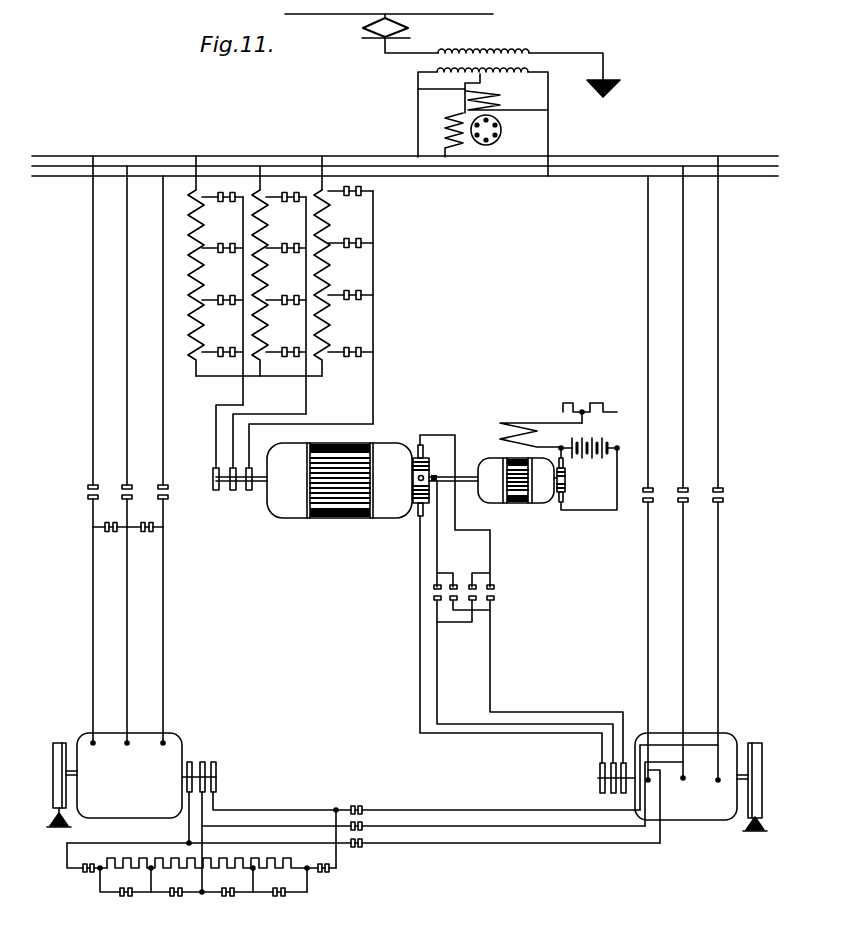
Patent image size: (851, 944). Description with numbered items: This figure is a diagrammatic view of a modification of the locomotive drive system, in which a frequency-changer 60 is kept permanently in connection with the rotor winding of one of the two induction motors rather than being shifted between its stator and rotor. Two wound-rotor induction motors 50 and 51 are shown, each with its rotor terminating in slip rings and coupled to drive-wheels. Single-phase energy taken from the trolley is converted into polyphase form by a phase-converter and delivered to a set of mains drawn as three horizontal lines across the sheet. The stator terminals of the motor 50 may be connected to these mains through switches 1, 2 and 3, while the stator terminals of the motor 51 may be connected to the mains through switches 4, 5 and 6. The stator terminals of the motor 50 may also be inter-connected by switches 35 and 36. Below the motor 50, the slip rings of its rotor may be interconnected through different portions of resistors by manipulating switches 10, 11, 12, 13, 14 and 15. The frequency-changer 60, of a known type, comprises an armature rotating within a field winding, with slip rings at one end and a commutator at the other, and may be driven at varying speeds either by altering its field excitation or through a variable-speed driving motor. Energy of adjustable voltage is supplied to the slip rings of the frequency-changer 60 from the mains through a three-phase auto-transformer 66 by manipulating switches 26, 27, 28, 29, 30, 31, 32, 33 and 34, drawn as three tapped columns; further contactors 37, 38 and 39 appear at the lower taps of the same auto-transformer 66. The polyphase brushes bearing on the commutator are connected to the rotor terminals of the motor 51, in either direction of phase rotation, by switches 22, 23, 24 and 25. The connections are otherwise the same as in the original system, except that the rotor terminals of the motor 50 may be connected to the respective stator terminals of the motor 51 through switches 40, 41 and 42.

The switch 1 is at (87, 492).
The switch 2 is at (121, 492).
The switch 3 is at (157, 492).
The switch 4 is at (642, 495).
The switch 5 is at (677, 495).
The switch 6 is at (712, 495).
The switch 10 is at (86, 873).
The switch 11 is at (324, 873).
The switch 12 is at (133, 901).
The switch 13 is at (280, 901).
The switch 14 is at (186, 901).
The switch 15 is at (235, 901).
The switch 22 is at (445, 602).
The switch 23 is at (433, 590).
The switch 24 is at (493, 589).
The switch 25 is at (478, 602).
The switch 26 is at (222, 189).
The switch 27 is at (222, 240).
The switch 28 is at (222, 293).
The switch 29 is at (286, 189).
The switch 30 is at (286, 240).
The switch 31 is at (286, 293).
The switch 32 is at (350, 200).
The switch 33 is at (350, 253).
The switch 34 is at (350, 306).
The switch 35 is at (110, 538).
The switch 36 is at (145, 538).
The resistance contactor 37 is at (222, 363).
The resistance contactor 38 is at (286, 363).
The resistance contactor 39 is at (350, 363).
The switch 40 is at (492, 802).
The switch 41 is at (358, 830).
The switch 42 is at (505, 852).
The induction motor 50 is at (131, 780).
The induction motor 51 is at (682, 788).
The frequency-changer 60 is at (335, 549).
The three-phase auto-transformer 66 is at (401, 284).